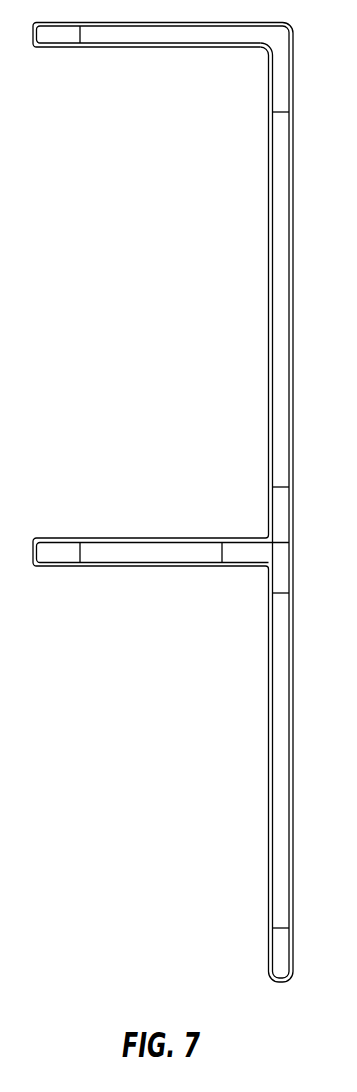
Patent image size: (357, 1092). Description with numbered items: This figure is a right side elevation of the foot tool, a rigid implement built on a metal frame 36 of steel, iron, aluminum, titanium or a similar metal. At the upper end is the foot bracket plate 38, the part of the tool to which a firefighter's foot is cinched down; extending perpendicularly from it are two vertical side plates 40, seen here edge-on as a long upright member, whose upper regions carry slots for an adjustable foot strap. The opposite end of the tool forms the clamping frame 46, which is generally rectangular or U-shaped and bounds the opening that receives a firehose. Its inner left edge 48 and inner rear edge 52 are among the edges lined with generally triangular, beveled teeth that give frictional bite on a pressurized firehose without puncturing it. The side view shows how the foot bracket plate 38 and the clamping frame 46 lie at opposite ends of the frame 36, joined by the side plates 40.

The vertical side plates 40 is at (173, 49).
The foot bracket plate 38 is at (268, 308).
The metal frame 36 is at (268, 588).
The inner rear edge 52 is at (268, 715).
The clamping frame 46 is at (268, 842).
The inner left edge 48 is at (268, 942).